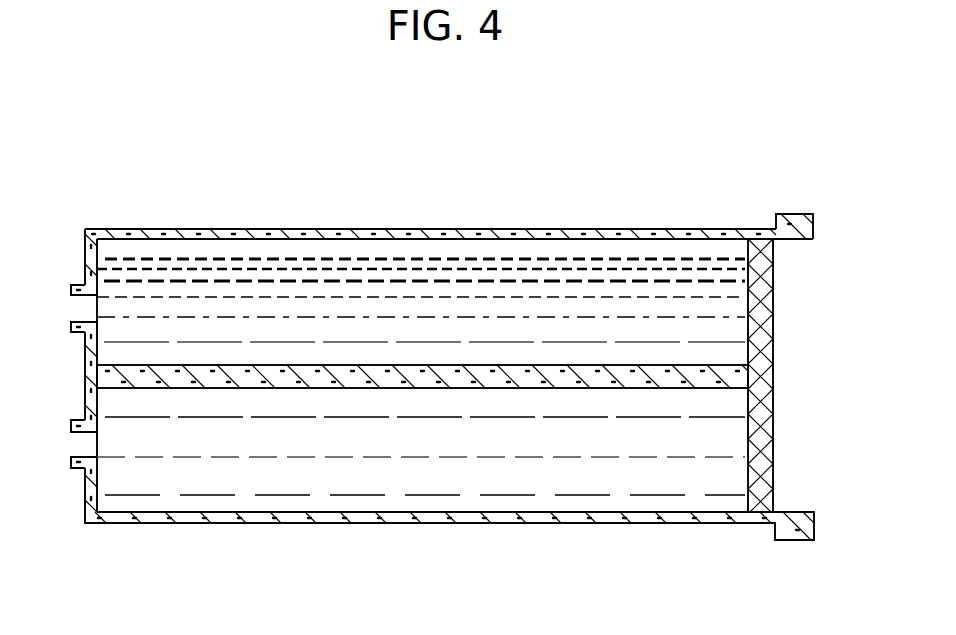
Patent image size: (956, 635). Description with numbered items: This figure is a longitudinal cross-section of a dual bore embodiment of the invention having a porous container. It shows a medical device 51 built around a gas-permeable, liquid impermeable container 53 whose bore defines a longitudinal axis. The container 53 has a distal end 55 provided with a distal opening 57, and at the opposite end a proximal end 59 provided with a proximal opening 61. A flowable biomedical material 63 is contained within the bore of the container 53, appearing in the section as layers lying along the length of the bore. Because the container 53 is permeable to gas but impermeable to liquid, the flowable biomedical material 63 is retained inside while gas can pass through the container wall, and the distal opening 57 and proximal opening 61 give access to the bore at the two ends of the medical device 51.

The medical device 51 is at (505, 180).
The gas-permeable, liquid impermeable container 53 is at (515, 230).
The distal end 55 is at (155, 232).
The distal opening 57 is at (62, 300).
The proximal end 59 is at (795, 214).
The proximal opening 61 is at (800, 295).
The flowable biomedical material 63 is at (380, 275).